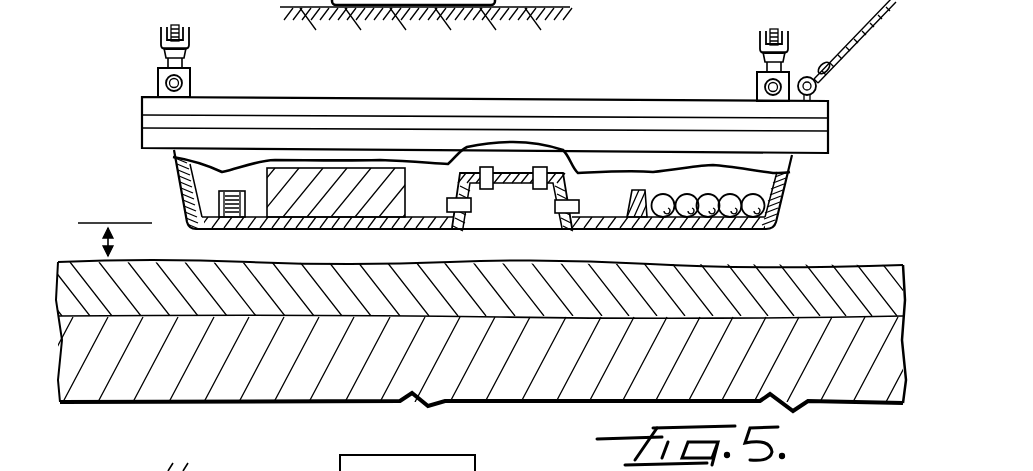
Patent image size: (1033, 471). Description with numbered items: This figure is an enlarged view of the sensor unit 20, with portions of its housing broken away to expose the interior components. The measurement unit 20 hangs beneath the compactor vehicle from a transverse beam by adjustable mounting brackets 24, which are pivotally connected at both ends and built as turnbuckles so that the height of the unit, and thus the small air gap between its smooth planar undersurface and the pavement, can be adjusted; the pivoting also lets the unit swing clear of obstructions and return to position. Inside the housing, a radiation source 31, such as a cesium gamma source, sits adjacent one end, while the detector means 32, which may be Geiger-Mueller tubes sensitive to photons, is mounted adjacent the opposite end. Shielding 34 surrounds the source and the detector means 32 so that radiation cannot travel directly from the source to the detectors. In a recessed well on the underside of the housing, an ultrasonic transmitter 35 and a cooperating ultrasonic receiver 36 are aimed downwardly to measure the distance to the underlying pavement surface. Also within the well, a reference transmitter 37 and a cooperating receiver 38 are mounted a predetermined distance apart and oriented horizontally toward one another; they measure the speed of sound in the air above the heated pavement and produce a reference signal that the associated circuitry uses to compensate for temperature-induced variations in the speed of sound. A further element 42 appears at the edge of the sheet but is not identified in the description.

The sensor unit 20 is at (787, 184).
The adjustable mounting brackets 24 is at (160, 38).
The radiation source 31 is at (232, 217).
The detector means 32 is at (657, 228).
The shielding 34 is at (357, 205).
The ultrasonic transmitter 35 is at (487, 189).
The ultrasonic receiver 36 is at (542, 189).
The reference transmitter 37 is at (447, 203).
The reference receiver 38 is at (579, 206).
The control unit 42 is at (428, 455).